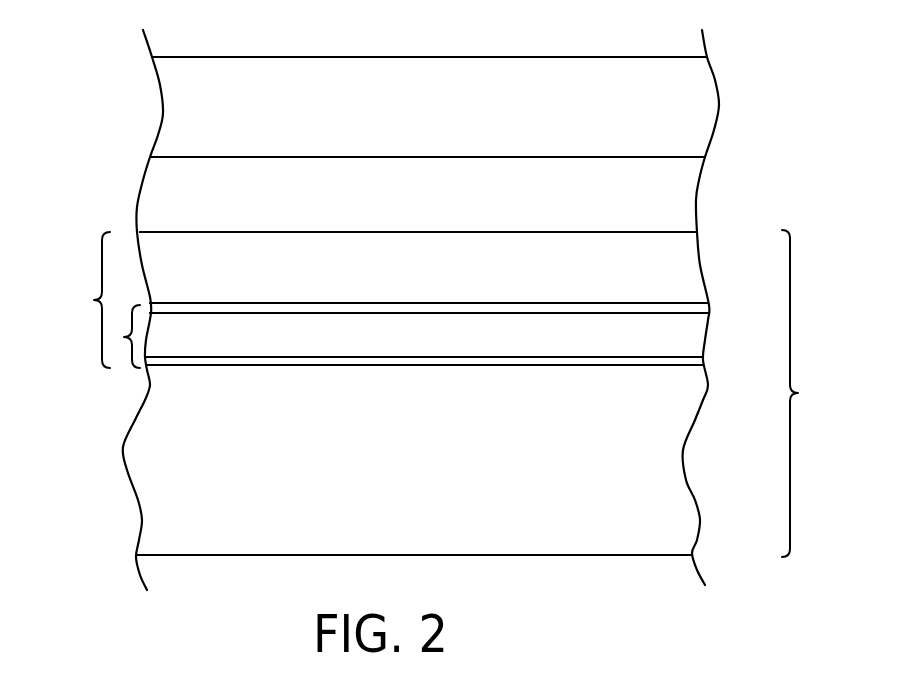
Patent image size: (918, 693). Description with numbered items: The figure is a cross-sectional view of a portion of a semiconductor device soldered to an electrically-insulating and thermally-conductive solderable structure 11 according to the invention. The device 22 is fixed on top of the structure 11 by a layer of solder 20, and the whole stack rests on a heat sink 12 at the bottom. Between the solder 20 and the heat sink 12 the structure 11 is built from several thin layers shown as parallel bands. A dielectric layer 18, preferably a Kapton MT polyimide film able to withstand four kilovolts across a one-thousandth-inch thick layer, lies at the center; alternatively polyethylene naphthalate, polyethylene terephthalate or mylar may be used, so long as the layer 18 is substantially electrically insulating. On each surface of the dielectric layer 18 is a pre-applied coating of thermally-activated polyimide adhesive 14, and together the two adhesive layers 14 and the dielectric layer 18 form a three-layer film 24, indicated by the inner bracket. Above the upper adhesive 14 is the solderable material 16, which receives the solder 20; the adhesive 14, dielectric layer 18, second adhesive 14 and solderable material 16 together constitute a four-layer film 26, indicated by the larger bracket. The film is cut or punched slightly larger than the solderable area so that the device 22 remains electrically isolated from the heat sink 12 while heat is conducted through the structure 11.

The electrically-insulating and thermally-conductive solderable structure 11 is at (812, 393).
The heat sink 12 is at (683, 452).
The thermally-activated polyimide adhesive 14 is at (709, 306).
The solderable material 16 is at (703, 268).
The dielectric layer 18 is at (705, 341).
The solder 20 is at (697, 197).
The device 22 is at (719, 105).
The three-layer film 24 is at (130, 337).
The four-layer film 26 is at (100, 300).